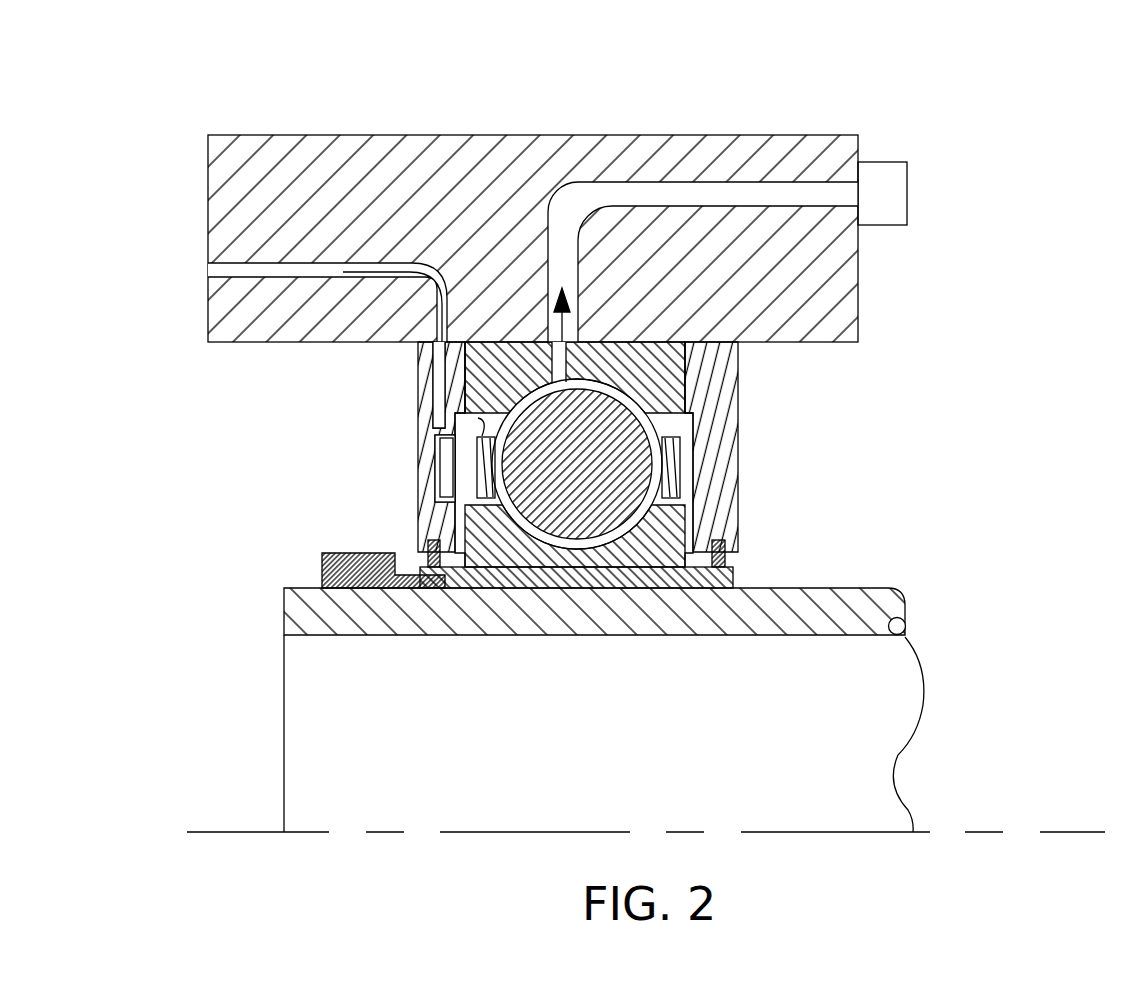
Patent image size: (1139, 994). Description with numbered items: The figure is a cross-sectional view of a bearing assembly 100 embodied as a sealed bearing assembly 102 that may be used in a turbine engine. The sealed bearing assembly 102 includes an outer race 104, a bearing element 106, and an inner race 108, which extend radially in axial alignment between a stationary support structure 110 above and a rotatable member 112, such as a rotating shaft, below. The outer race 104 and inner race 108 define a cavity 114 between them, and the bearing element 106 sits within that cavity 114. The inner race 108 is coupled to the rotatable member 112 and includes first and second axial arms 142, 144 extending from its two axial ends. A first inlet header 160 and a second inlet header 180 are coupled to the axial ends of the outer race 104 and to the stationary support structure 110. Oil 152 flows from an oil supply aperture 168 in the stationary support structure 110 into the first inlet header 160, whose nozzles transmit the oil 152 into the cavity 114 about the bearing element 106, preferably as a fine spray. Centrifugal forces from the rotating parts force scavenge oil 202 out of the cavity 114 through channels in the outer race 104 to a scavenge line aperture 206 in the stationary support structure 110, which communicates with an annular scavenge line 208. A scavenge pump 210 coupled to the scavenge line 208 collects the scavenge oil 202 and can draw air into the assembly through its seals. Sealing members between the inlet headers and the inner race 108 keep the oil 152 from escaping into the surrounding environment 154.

The bearing assembly 100 is at (890, 100).
The sealed bearing assembly 102 is at (695, 454).
The outer race 104 is at (673, 363).
The bearing element 106 is at (705, 485).
The inner race 108 is at (700, 572).
The stationary support structure 110 is at (313, 148).
The rotatable member 112 is at (290, 625).
The cavity 114 is at (480, 415).
The first axial arm 142 is at (430, 578).
The second axial arm 144 is at (720, 595).
The oil 152 is at (441, 347).
The environment 154 is at (818, 550).
The first inlet header 160 is at (427, 510).
The oil supply aperture 168 is at (428, 334).
The second inlet header 180 is at (720, 410).
The scavenge oil 202 is at (752, 224).
The scavenge line aperture 206 is at (578, 333).
The scavenge line 208 is at (790, 188).
The scavenge pump 210 is at (908, 193).